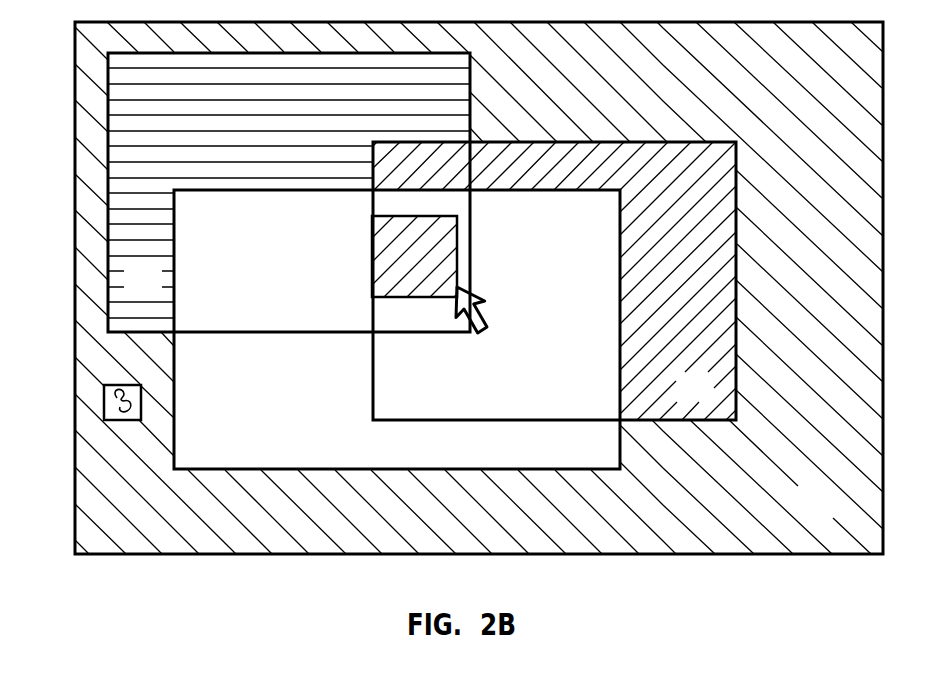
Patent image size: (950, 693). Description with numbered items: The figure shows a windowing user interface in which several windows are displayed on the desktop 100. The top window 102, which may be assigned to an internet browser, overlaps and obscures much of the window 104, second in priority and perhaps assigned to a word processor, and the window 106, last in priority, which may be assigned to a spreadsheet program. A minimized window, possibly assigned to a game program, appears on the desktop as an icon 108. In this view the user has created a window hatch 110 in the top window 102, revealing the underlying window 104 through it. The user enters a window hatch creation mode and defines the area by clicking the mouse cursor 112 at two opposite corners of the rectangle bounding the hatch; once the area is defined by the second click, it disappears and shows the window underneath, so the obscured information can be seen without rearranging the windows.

The desktop 100 is at (832, 514).
The top window 102 is at (583, 450).
The window 104 is at (710, 398).
The window 106 is at (157, 293).
The icon 108 is at (110, 404).
The window hatch 110 is at (457, 254).
The mouse cursor 112 is at (484, 303).